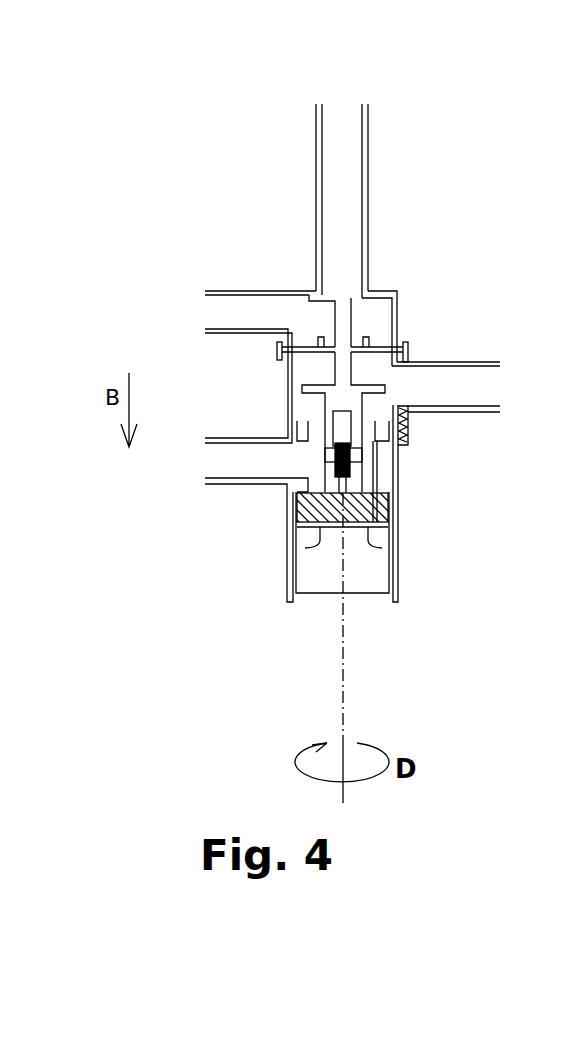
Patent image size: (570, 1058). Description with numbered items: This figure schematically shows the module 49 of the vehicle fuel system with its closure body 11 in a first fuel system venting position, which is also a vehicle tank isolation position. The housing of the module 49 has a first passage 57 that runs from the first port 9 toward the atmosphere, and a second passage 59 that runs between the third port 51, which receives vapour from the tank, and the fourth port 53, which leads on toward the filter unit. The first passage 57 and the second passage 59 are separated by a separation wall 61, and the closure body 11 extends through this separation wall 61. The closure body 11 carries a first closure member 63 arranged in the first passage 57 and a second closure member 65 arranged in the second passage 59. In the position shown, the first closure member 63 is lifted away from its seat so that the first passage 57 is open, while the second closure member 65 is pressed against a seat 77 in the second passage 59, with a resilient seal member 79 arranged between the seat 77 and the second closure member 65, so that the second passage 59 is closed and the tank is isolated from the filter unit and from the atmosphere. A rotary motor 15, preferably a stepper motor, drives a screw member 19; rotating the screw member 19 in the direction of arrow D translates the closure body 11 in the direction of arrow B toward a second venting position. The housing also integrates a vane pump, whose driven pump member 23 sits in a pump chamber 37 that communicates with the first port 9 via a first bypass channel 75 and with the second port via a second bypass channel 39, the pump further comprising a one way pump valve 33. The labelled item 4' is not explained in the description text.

The third port 51 is at (340, 137).
The module 49 is at (430, 185).
The second closure member 65 is at (350, 295).
The resilient seal member 79 is at (311, 293).
The fourth port 53 is at (228, 296).
The seat 77 is at (378, 299).
The second passage 59 is at (378, 326).
The separation wall 61 is at (358, 355).
The outlet pipe 4' is at (470, 387).
The closure body 11 is at (335, 360).
The first closure member 63 is at (308, 402).
The first passage 57 is at (380, 403).
The one way pump valve 33 is at (410, 432).
The second bypass channel 39 is at (395, 466).
The first bypass channel 75 is at (323, 482).
The screw member 19 is at (354, 472).
The first port 9 is at (238, 468).
The driven pump member 23 is at (305, 548).
The pump chamber 37 is at (380, 547).
The rotary motor 15 is at (368, 583).